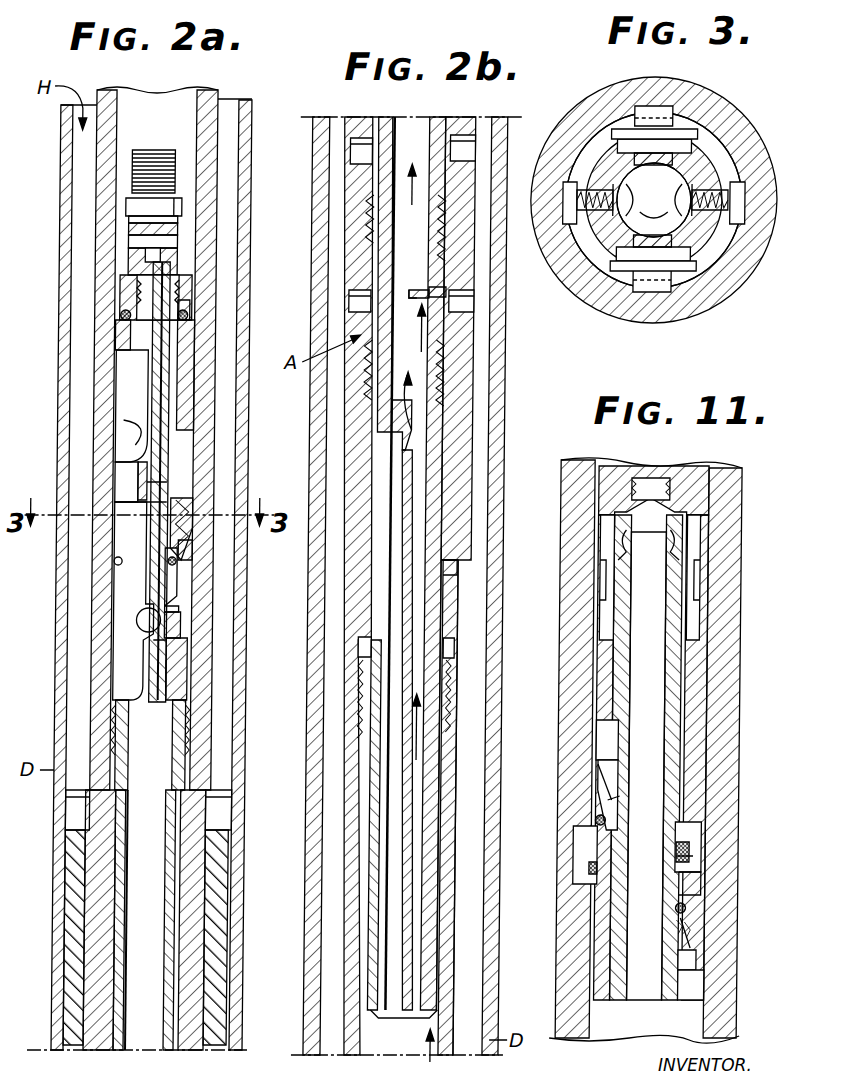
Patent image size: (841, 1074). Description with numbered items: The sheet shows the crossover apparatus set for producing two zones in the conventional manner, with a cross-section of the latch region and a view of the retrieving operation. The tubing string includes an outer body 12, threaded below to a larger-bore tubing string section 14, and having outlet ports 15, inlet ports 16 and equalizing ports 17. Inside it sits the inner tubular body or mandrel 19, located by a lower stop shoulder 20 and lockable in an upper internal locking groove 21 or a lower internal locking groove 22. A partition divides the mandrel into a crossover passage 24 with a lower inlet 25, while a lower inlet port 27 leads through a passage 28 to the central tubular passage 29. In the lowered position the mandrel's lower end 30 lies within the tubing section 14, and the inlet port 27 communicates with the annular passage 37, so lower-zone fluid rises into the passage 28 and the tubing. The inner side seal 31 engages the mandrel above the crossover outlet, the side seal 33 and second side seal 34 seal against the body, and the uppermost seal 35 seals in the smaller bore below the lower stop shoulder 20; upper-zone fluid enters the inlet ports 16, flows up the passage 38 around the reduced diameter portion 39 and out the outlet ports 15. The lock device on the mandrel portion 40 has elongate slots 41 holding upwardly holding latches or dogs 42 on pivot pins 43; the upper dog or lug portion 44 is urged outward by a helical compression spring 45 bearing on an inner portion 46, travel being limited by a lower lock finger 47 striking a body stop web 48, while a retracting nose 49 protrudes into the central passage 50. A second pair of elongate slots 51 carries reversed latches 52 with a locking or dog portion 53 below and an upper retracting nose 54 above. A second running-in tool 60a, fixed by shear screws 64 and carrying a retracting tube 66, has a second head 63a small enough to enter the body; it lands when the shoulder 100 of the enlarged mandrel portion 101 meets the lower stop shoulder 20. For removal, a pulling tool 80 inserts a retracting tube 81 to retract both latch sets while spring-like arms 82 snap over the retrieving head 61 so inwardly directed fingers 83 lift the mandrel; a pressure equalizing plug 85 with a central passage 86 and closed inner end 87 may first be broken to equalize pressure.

In FIG. 2a, the outer body 12 is at (95, 882).
In FIG. 2b, the outer body 12 is at (470, 552).
In FIG. 3, the outer body 12 is at (708, 300).
In FIG. 11, the outer body 12 is at (580, 1000).
In FIG. 2b, the tubing string section 14 is at (456, 948).
In FIG. 2a, the outlet ports 15 is at (222, 806).
In FIG. 2b, the inlet ports 16 is at (358, 152).
In FIG. 2b, the equalizing ports 17 is at (360, 302).
In FIG. 2a, the inner tubular body or mandrel 19 is at (125, 1010).
In FIG. 2b, the inner tubular body or mandrel 19 is at (370, 277).
In FIG. 3, the inner tubular body or mandrel 19 is at (590, 120).
In FIG. 2a, the lower stop shoulder 20 is at (115, 528).
In FIG. 11, the upper internal locking groove 21 is at (712, 888).
In FIG. 2a, the lower internal locking groove 22 is at (198, 550).
In FIG. 3, the lower internal locking groove 22 is at (690, 115).
In FIG. 2b, the crossover passage 24 is at (372, 650).
In FIG. 2b, the lower inlet 25 is at (394, 742).
In FIG. 2b, the lower inlet port 27 is at (446, 728).
In FIG. 2b, the passage 28 is at (424, 506).
In FIG. 2a, the central tubular passage 29 is at (137, 1033).
In FIG. 2b, the central tubular passage 29 is at (412, 173).
In FIG. 2b, the lower end of mandrel 30 is at (380, 882).
In FIG. 2b, the inner side seal 31 is at (446, 404).
In FIG. 2b, the side seal 33 is at (446, 610).
In FIG. 2b, the side seal 34 is at (374, 215).
In FIG. 2a, the uppermost seal 35 is at (192, 738).
In FIG. 2b, the annular passage 37 is at (446, 856).
In FIG. 2a, the passage 38 is at (205, 938).
In FIG. 2a, the reduced diameter portion 39 is at (200, 1006).
In FIG. 2a, the mandrel portion 40 is at (179, 650).
In FIG. 2a, the elongate slots 41 is at (185, 644).
In FIG. 3, the elongate slots 41 is at (570, 185).
In FIG. 2a, the upwardly holding latches or dogs 42 is at (184, 560).
In FIG. 3, the upwardly holding latches or dogs 42 is at (734, 192).
In FIG. 11, the upwardly holding latches or dogs 42 is at (696, 934).
In FIG. 2a, the pivot pin 43 is at (182, 564).
In FIG. 11, the pivot pin 43 is at (696, 910).
In FIG. 2a, the upper dog or lug portion 44 is at (196, 538).
In FIG. 3, the upper dog or lug portion 44 is at (568, 210).
In FIG. 11, the upper dog or lug portion 44 is at (702, 850).
In FIG. 2a, the helical compression spring 45 is at (190, 500).
In FIG. 3, the helical compression spring 45 is at (600, 270).
In FIG. 2a, the inner portion 46 is at (170, 502).
In FIG. 11, the inner portion 46 is at (684, 856).
In FIG. 2a, the lower lock finger 47 is at (186, 610).
In FIG. 11, the lower lock finger 47 is at (702, 960).
In FIG. 2a, the body stop web 48 is at (189, 624).
In FIG. 11, the body stop web 48 is at (702, 992).
In FIG. 2a, the retracting nose 49 is at (150, 608).
In FIG. 3, the retracting nose 49 is at (654, 210).
In FIG. 11, the retracting nose 49 is at (686, 936).
In FIG. 2a, the central passage 50 is at (172, 690).
In FIG. 3, the central passage 50 is at (654, 200).
In FIG. 2a, the elongate slots 51 is at (135, 418).
In FIG. 3, the elongate slots 51 is at (668, 138).
In FIG. 11, the elongate slots 51 is at (606, 742).
In FIG. 2a, the latches 52 is at (145, 470).
In FIG. 3, the latches 52 is at (640, 110).
In FIG. 11, the latches 52 is at (600, 798).
In FIG. 3, the locking or dog portion 53 is at (660, 110).
In FIG. 11, the locking or dog portion 53 is at (598, 876).
In FIG. 11, the upper retracting nose 54 is at (621, 796).
In FIG. 2a, the second running-in tool 60a is at (190, 262).
In FIG. 11, the retrieving head 61 is at (688, 560).
In FIG. 2a, the second head 63a is at (128, 292).
In FIG. 2a, the shear screws 64 is at (191, 313).
In FIG. 2a, the retracting tube 66 is at (176, 392).
In FIG. 11, the pulling tool 80 is at (714, 497).
In FIG. 11, the retracting tube 81 is at (624, 676).
In FIG. 11, the spring-like arms 82 is at (604, 570).
In FIG. 11, the inwardly directed fingers 83 is at (704, 634).
In FIG. 2b, the pressure equalizing plug 85 is at (414, 683).
In FIG. 2b, the central passage 86 is at (449, 291).
In FIG. 2b, the closed inner end 87 is at (410, 292).
In FIG. 2a, the shoulder 100 is at (121, 564).
In FIG. 2a, the enlarged mandrel portion 101 is at (128, 484).
In FIG. 11, the enlarged mandrel portion 101 is at (700, 748).